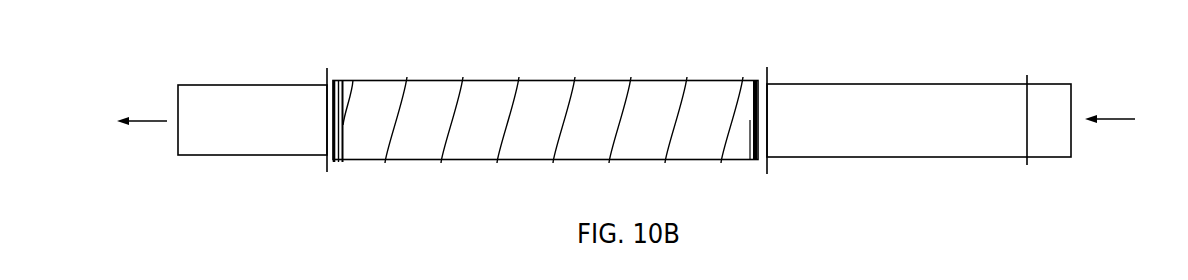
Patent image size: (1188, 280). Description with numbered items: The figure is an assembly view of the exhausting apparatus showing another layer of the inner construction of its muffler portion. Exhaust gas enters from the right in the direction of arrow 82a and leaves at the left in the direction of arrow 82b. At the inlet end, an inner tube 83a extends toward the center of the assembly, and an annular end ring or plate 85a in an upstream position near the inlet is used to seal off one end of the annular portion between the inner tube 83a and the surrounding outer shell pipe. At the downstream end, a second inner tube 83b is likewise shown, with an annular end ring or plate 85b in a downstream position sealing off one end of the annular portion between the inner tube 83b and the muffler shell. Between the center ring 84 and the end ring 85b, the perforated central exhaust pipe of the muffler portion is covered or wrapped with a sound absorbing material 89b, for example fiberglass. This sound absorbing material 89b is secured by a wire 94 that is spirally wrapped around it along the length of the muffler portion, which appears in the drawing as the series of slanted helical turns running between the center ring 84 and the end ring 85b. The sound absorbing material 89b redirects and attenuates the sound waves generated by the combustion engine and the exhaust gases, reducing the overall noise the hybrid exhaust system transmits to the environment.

The arrow indicating incoming exhaust gas flow 82a is at (1115, 119).
The arrow indicating exiting exhaust gas flow 82b is at (143, 120).
The inner tube 83a is at (920, 85).
The inner tube 83b is at (241, 86).
The center ring 84 is at (767, 73).
The annular end ring or plate 85a is at (1030, 82).
The annular end ring or plate 85b is at (327, 70).
The sound absorbing material 89b is at (425, 90).
The wire 94 is at (445, 156).